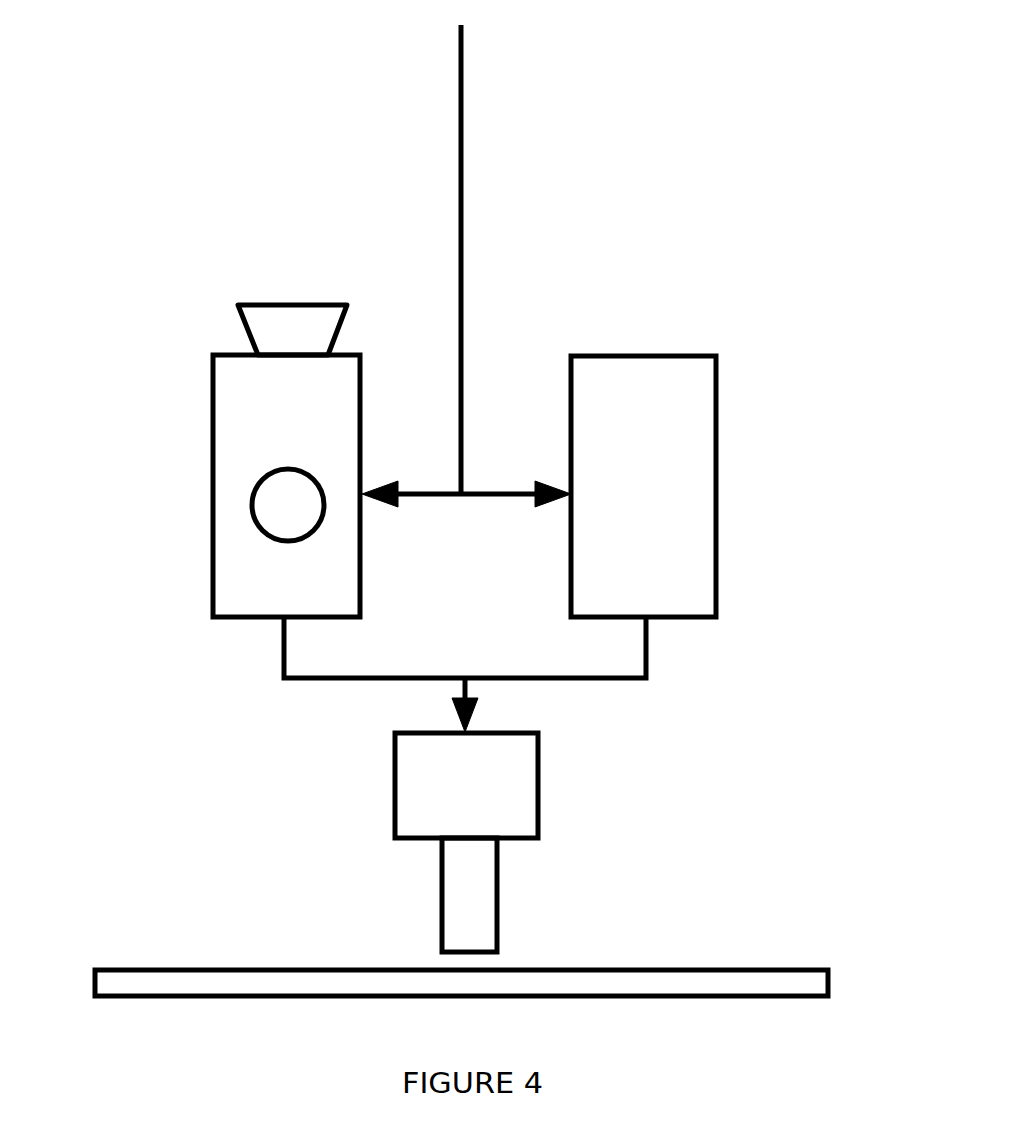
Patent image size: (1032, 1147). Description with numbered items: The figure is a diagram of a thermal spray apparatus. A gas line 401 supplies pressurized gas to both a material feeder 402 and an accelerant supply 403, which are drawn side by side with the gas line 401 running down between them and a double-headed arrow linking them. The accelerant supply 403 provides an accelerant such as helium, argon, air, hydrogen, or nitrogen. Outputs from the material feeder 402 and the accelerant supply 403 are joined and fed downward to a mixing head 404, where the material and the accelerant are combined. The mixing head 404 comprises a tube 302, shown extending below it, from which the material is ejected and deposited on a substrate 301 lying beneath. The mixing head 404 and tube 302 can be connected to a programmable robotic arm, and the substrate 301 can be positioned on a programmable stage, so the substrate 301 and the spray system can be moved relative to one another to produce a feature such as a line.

The substrate 301 is at (502, 926).
The tube 302 is at (550, 895).
The gas line 401 is at (552, 255).
The material feeder 402 is at (200, 461).
The accelerant supply 403 is at (729, 456).
The mixing head 404 is at (550, 780).